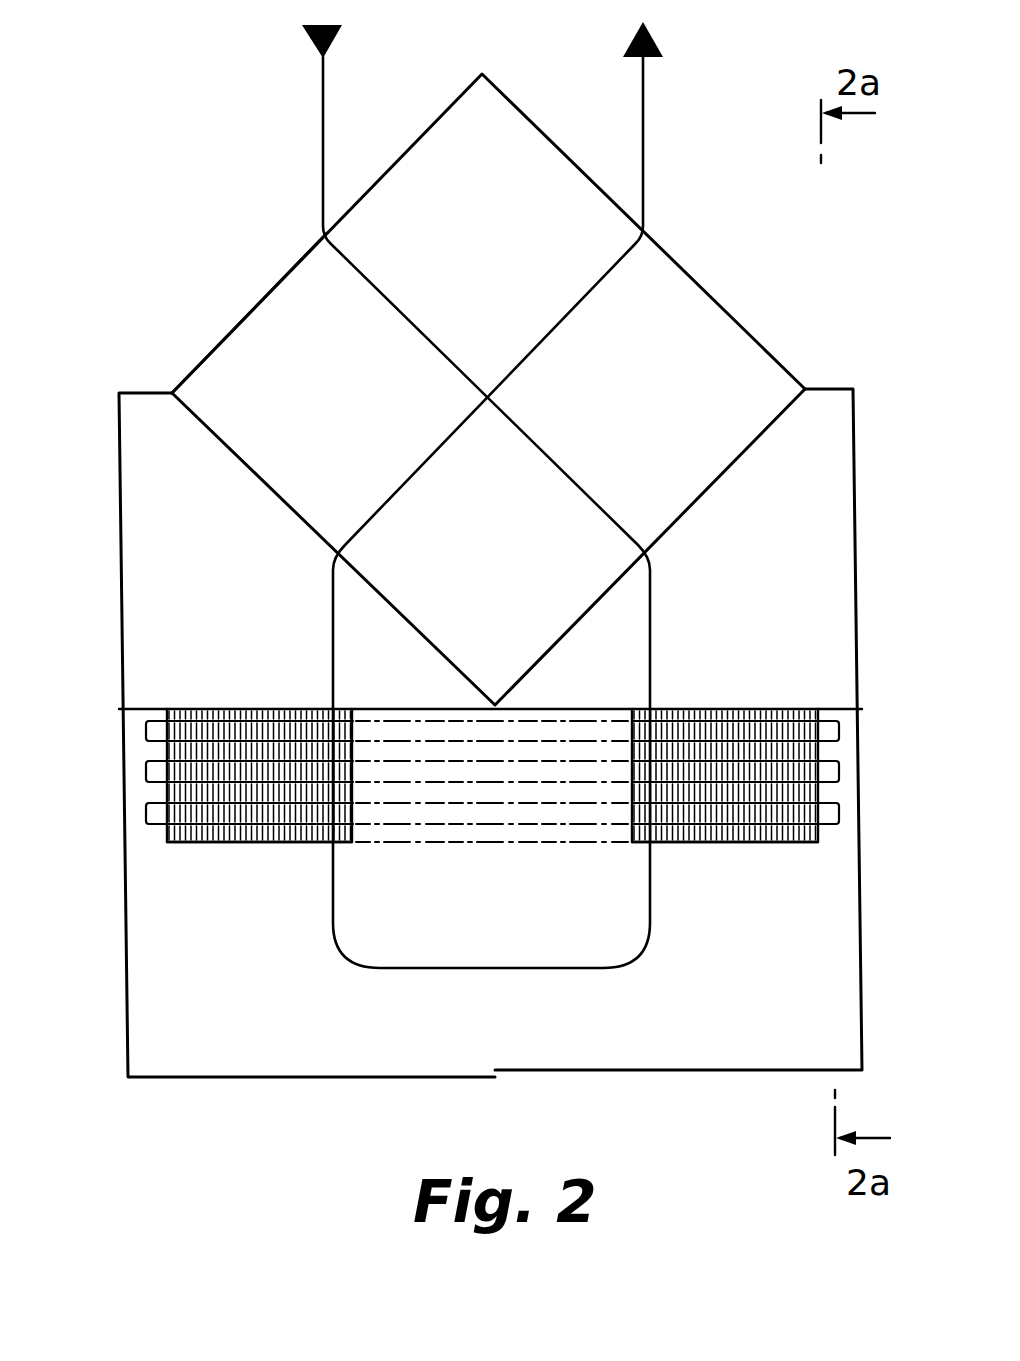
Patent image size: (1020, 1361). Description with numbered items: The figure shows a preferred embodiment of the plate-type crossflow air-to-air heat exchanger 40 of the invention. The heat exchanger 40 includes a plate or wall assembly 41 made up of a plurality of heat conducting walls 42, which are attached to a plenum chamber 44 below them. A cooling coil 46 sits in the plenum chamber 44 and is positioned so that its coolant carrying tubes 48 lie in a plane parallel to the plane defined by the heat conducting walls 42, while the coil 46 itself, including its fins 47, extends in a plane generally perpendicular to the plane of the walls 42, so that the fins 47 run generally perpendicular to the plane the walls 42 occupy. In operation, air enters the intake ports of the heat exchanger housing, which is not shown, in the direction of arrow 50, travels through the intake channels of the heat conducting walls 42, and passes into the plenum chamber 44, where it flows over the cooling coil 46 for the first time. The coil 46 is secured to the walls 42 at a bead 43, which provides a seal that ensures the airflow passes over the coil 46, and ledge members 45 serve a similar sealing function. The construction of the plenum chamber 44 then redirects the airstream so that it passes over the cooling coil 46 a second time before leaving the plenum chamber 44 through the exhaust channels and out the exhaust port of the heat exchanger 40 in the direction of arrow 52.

The heat exchanger 40 is at (480, 549).
The plate or wall assembly 41 is at (718, 293).
The heat conducting walls 42 is at (203, 356).
The bead 43 is at (503, 701).
The plenum chamber 44 is at (121, 638).
The ledge members 45 is at (150, 710).
The cooling coil 46 is at (872, 695).
The fins 47 is at (772, 842).
The coolant carrying tubes 48 is at (839, 725).
The arrow 50 is at (321, 72).
The arrow 52 is at (646, 62).